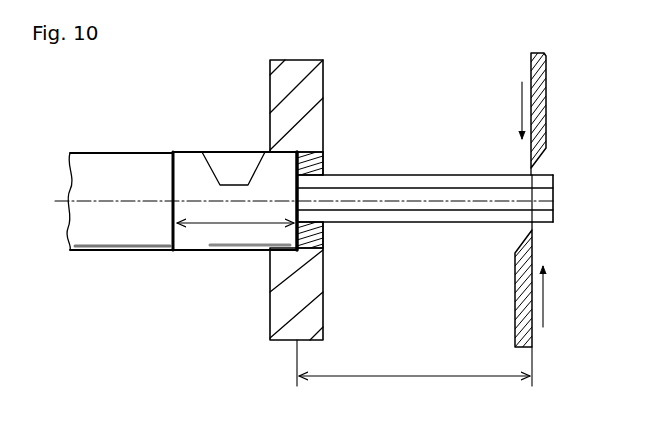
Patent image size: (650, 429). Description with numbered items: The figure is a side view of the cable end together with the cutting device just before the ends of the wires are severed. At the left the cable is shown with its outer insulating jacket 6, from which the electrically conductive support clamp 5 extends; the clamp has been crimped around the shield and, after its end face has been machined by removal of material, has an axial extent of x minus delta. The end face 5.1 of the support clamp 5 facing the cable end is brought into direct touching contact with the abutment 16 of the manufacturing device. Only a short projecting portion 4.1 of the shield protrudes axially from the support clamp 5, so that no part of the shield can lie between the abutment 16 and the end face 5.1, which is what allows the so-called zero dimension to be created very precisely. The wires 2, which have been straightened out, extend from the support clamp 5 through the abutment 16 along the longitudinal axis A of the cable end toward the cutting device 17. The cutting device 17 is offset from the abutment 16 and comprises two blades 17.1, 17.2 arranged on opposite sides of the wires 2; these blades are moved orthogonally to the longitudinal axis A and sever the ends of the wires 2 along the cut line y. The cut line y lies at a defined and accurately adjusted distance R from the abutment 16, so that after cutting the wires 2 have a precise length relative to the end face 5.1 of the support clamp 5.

The wires 2 is at (555, 180).
The support clamp 5 is at (234, 250).
The end face 5.1 is at (312, 160).
The projecting portion 4.1 is at (305, 232).
The jacket 6 is at (100, 248).
The abutment 16 is at (323, 93).
The cutting device 17 is at (508, 106).
The blade 17.1 is at (549, 96).
The blade 17.2 is at (513, 284).
The longitudinal axis A is at (418, 204).
The cut line y is at (553, 176).
The distance R is at (414, 363).